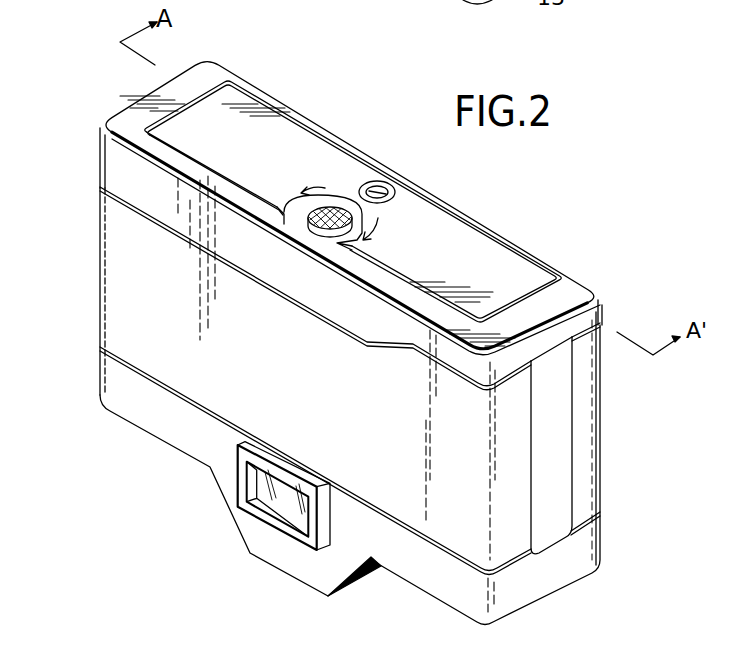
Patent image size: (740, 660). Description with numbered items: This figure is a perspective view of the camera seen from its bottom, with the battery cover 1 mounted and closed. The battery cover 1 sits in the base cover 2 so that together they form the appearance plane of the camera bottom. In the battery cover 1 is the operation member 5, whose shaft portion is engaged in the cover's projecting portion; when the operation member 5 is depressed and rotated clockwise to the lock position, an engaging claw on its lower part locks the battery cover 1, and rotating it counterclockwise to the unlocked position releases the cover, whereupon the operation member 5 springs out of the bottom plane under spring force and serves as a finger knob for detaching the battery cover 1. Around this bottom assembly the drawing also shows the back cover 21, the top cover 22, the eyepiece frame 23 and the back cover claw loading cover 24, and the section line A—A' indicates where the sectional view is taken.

The battery cover 1 is at (420, 205).
The base cover 2 is at (580, 282).
The operation member 5 is at (328, 214).
The back cover 21 is at (123, 288).
The top cover 22 is at (437, 580).
The eyepiece frame 23 is at (250, 512).
The back cover claw loading cover 24 is at (558, 537).